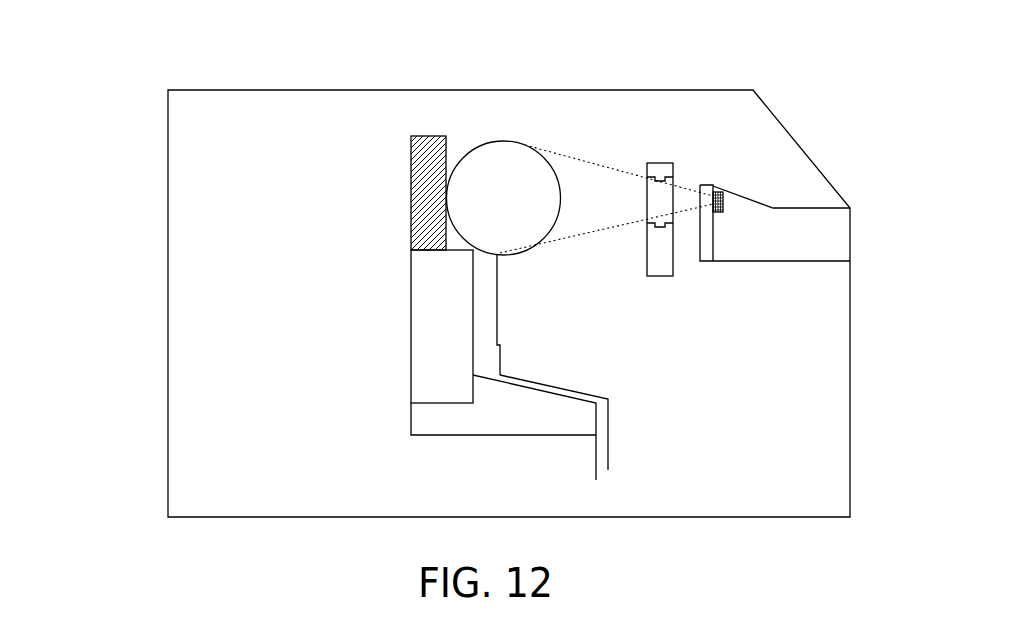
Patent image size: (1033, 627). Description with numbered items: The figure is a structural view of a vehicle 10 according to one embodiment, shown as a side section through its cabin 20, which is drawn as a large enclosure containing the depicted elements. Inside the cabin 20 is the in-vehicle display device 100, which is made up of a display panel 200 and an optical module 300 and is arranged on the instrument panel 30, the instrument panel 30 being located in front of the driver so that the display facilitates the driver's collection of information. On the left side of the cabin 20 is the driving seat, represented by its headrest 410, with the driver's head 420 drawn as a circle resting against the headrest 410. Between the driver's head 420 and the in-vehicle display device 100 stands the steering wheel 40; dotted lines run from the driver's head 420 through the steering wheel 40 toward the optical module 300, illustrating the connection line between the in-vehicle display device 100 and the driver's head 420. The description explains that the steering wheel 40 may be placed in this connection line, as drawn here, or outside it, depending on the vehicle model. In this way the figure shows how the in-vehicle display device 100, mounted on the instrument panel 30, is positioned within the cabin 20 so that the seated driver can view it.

The vehicle 10 is at (122, 60).
The cabin 20 is at (167, 220).
The instrument panel 30 is at (750, 199).
The steering wheel 40 is at (662, 163).
The in-vehicle display device 100 is at (868, 95).
The display panel 200 is at (712, 186).
The optical module 300 is at (726, 194).
The headrest 410 is at (432, 136).
The driver's head 420 is at (504, 140).